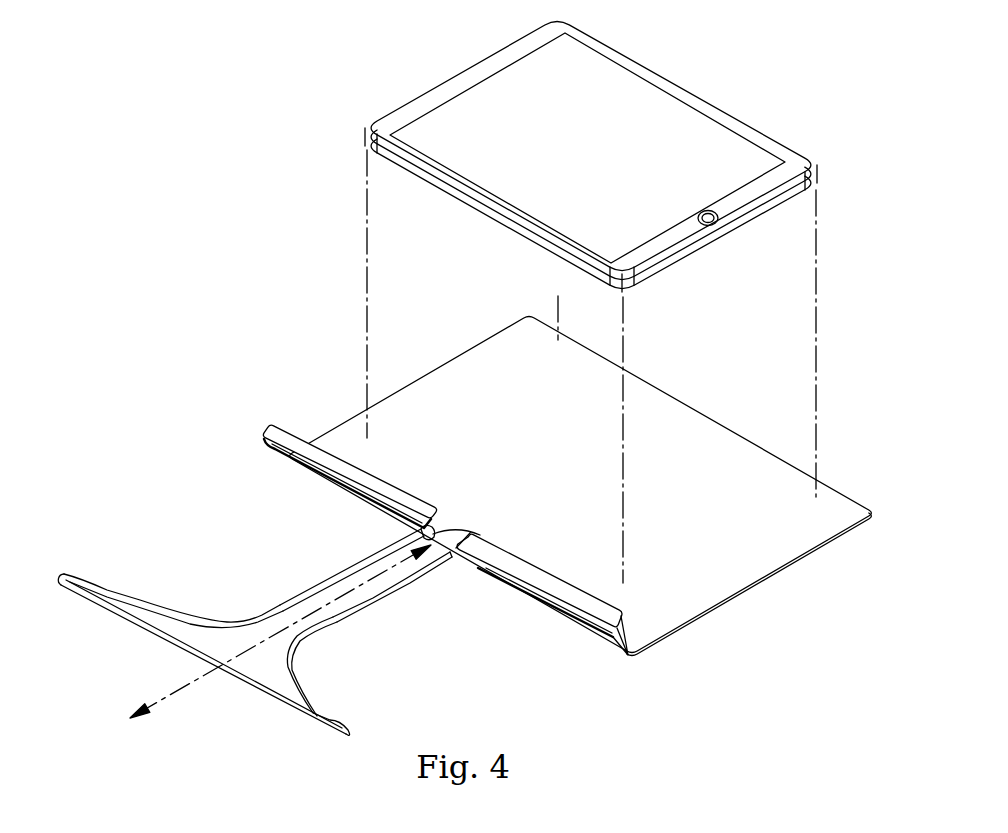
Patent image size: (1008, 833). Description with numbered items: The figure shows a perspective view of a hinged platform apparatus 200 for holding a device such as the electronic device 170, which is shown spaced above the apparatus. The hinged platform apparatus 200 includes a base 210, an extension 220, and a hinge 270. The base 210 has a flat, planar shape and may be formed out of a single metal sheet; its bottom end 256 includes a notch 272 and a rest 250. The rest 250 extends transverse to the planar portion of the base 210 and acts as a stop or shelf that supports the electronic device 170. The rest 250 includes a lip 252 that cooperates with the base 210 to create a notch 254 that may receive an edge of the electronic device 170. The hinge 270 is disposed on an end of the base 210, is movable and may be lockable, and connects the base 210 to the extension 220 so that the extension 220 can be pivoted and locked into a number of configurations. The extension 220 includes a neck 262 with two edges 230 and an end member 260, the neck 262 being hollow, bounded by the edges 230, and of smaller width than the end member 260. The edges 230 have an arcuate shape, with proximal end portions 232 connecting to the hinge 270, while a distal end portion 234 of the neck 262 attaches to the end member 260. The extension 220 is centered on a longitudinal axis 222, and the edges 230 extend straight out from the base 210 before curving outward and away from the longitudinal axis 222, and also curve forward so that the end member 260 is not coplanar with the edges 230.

The hinged platform apparatus 200 is at (243, 66).
The electronic device 170 is at (683, 94).
The base 210 is at (701, 419).
The extension 220 is at (334, 681).
The longitudinal axis 222 is at (167, 698).
The edges 230 is at (316, 583).
The proximal end portions 232 is at (380, 547).
The distal end portion 234 is at (107, 583).
The rest 250 is at (515, 594).
The lip 252 is at (551, 583).
The notch 254 is at (615, 646).
The bottom end 256 is at (303, 467).
The end member 260 is at (137, 625).
The neck 262 is at (329, 630).
The hinge 270 is at (434, 562).
The notch 272 is at (458, 528).